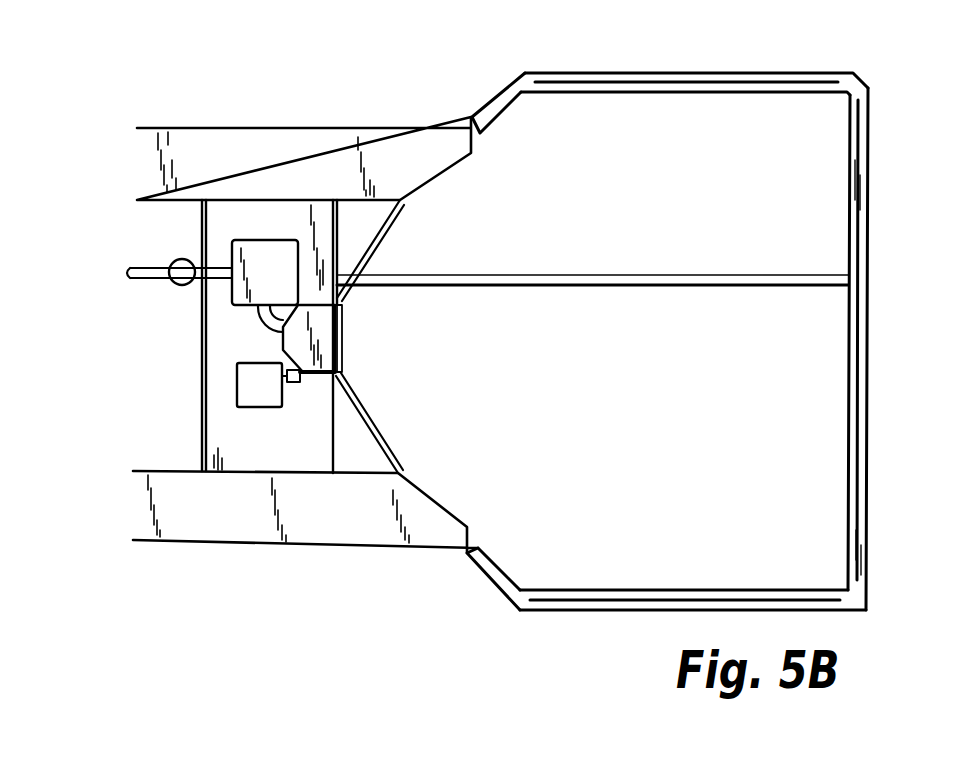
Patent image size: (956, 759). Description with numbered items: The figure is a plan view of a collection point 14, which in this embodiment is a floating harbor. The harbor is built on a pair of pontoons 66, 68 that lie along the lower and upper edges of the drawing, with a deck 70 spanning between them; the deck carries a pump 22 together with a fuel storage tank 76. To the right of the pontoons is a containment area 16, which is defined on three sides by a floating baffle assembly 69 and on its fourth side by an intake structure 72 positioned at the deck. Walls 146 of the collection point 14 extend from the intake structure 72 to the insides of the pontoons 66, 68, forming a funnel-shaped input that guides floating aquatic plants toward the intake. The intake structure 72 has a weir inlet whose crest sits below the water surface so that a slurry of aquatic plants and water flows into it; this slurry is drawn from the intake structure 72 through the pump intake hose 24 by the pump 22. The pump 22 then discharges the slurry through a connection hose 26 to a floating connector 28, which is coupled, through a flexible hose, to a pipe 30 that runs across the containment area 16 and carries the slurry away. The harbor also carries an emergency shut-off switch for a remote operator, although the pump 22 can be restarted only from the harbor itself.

The collection point 14 is at (151, 443).
The containment area 16 is at (667, 316).
The pump 22 is at (268, 256).
The pump intake hose 24 is at (255, 325).
The connection hose 26 is at (220, 283).
The floating connector 28 is at (178, 259).
The pipe 30 is at (517, 273).
The pontoon 66 is at (330, 518).
The pontoon 68 is at (290, 142).
The floating baffle assembly 69 is at (666, 73).
The deck 70 is at (282, 454).
The intake structure 72 is at (343, 323).
The fuel storage tank 76 is at (253, 385).
The walls 146 is at (368, 425).